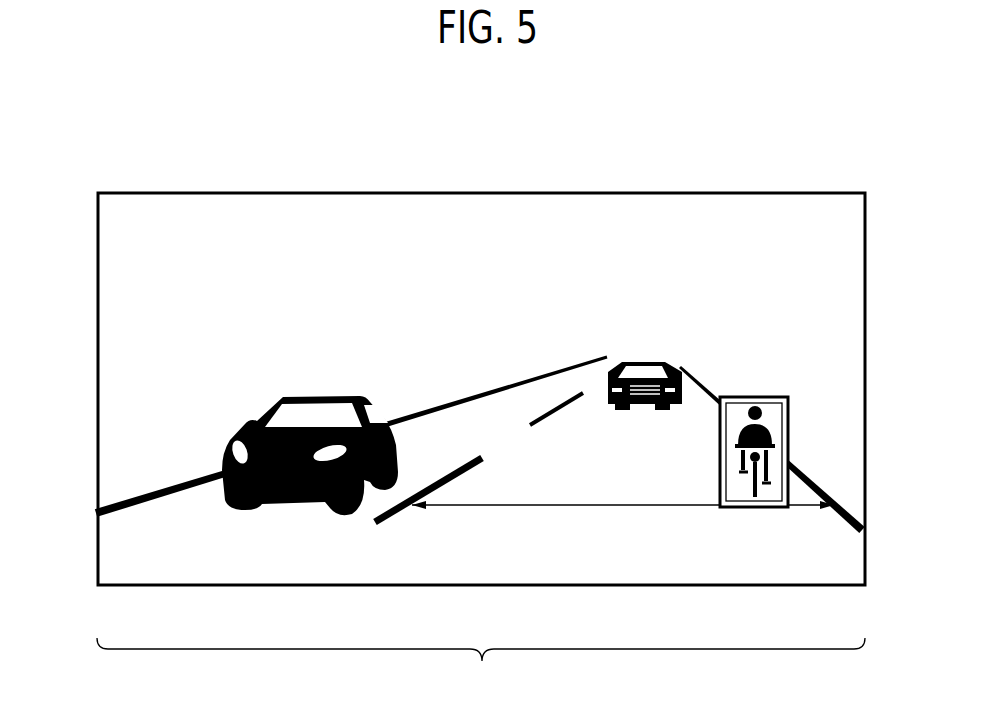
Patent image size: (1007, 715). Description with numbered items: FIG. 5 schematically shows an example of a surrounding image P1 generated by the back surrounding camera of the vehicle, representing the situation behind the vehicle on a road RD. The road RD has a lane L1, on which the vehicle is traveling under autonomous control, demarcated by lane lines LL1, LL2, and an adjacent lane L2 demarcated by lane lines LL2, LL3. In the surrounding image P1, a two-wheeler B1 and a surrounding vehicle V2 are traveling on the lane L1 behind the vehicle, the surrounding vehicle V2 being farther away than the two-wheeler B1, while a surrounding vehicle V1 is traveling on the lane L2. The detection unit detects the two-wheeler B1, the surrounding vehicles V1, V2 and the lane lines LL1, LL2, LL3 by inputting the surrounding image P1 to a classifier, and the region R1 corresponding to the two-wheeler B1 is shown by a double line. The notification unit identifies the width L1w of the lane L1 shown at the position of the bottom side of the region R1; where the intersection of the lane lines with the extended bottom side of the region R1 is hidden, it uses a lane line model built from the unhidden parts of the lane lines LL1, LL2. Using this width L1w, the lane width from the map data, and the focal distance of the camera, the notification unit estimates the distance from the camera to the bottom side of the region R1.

The surrounding image P1 is at (745, 180).
The surrounding vehicle V1 is at (250, 437).
The surrounding vehicle V2 is at (680, 367).
The region R1 is at (740, 398).
The two-wheeler B1 is at (775, 437).
The lane line LL1 is at (864, 531).
The lane line LL2 is at (376, 522).
The lane line LL3 is at (98, 515).
The lane L1 is at (742, 565).
The lane L2 is at (192, 565).
The width of the lane L1w is at (623, 521).
The road RD is at (481, 668).